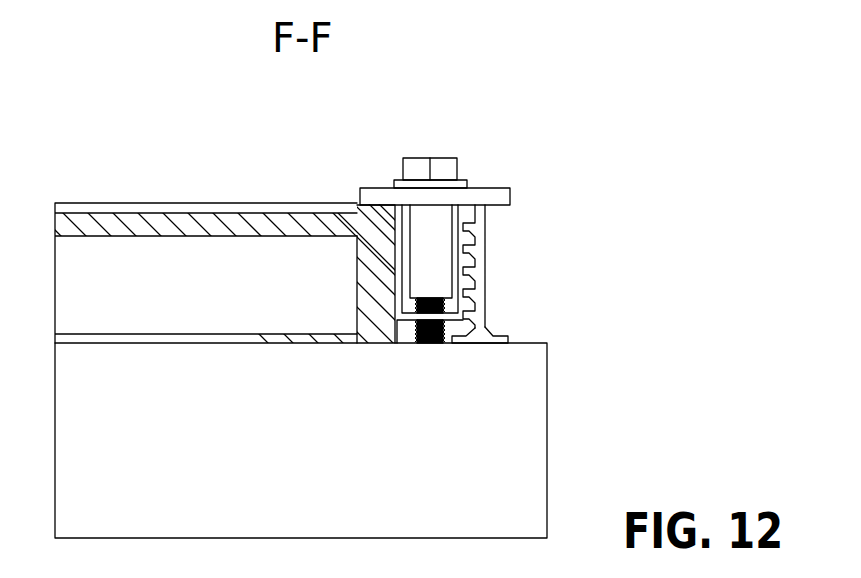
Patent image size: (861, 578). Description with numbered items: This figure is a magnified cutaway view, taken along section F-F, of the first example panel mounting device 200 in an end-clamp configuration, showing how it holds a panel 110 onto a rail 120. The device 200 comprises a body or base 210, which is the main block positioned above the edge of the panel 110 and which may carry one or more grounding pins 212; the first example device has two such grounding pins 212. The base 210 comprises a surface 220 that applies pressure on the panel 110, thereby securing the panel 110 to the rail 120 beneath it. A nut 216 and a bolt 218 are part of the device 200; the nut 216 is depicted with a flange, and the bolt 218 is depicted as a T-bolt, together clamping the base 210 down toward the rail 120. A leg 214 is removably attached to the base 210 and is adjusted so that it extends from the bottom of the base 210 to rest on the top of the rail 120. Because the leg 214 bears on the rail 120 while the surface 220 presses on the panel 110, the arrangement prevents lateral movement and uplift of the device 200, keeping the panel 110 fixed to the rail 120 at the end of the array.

The panel 110 is at (213, 202).
The rail 120 is at (548, 352).
The panel mounting device 200 is at (427, 110).
The body 210 is at (375, 188).
The grounding pin 212 is at (487, 207).
The leg 214 is at (483, 322).
The nut 216 is at (441, 157).
The bolt 218 is at (415, 333).
The surface 220 is at (378, 222).